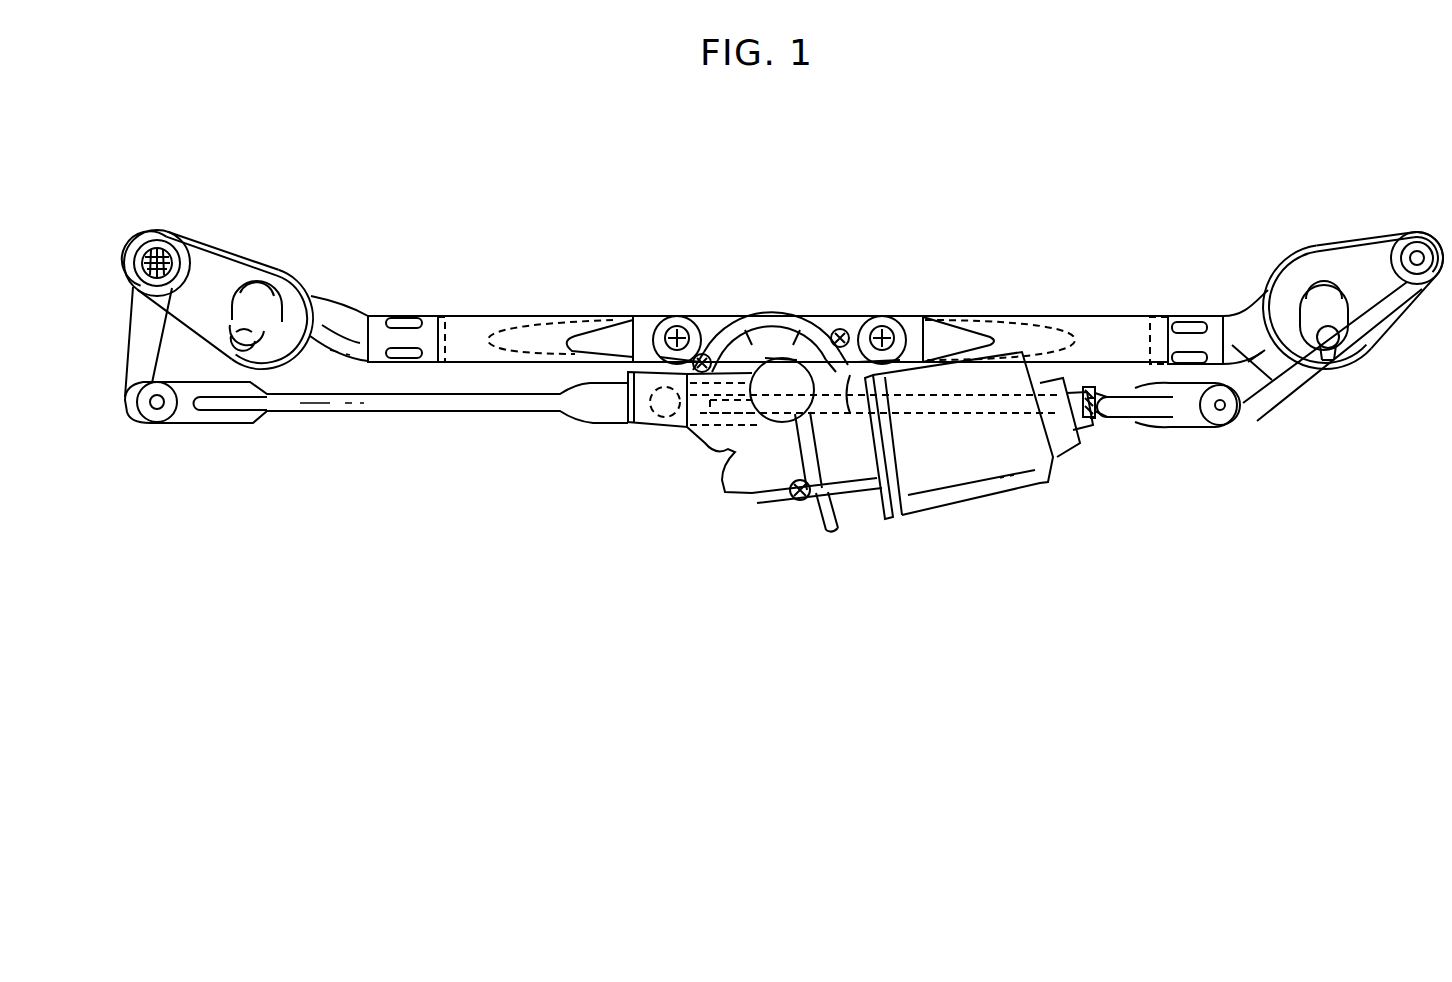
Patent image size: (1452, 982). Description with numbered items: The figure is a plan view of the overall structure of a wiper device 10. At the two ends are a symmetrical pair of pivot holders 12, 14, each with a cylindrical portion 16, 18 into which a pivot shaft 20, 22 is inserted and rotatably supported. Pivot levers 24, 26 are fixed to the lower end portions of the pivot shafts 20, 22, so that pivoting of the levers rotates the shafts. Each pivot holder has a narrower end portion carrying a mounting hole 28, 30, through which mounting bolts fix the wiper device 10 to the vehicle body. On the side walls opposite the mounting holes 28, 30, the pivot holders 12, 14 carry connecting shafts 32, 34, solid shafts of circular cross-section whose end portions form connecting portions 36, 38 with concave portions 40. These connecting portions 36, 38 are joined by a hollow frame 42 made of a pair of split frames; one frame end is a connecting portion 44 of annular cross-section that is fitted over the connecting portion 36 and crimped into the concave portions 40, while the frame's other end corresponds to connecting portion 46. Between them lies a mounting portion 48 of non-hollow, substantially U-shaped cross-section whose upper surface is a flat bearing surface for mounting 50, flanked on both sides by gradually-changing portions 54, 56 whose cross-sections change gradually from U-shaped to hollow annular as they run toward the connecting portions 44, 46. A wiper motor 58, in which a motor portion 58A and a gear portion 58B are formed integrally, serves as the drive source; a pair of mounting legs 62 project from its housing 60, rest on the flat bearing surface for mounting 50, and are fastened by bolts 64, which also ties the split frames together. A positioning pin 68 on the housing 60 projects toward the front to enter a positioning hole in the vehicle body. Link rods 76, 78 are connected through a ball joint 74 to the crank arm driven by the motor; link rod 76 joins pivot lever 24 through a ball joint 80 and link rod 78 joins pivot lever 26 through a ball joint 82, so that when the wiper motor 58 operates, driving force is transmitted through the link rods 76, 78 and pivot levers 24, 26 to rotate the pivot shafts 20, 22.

The wiper device 10 is at (789, 221).
The pivot holder 12 is at (265, 253).
The pivot holder 14 is at (1343, 240).
The cylindrical portion 16 is at (272, 295).
The cylindrical portion 18 is at (1310, 297).
The pivot shaft 20 is at (240, 325).
The pivot shaft 22 is at (1327, 350).
The pivot lever 24 is at (163, 357).
The pivot lever 26 is at (1247, 417).
The mounting hole 28 is at (160, 257).
The mounting hole 30 is at (1417, 258).
The connecting shaft 32 is at (347, 310).
The connecting shaft 34 is at (1243, 328).
The connecting portion 36 is at (447, 303).
The connecting portion 38 is at (1160, 323).
The concave portions 40 is at (405, 317).
The hollow frame 42 is at (1112, 302).
The connecting portion 44 is at (367, 360).
The connecting portion 46 is at (1217, 343).
The mounting portion 48 is at (648, 325).
The flat bearing surface for mounting 50 is at (912, 333).
The gradually-changing portion 54 is at (549, 334).
The gradually-changing portion 56 is at (1017, 330).
The wiper motor 58 is at (924, 512).
The motor portion 58A is at (978, 482).
The gear portion 58B is at (767, 513).
The housing 60 is at (733, 447).
The mounting legs 62 is at (695, 328).
The bolts 64 is at (677, 333).
The positioning pin 68 is at (847, 512).
The ball joint 74 is at (668, 407).
The link rod 76 is at (477, 412).
The link rod 78 is at (1110, 400).
The ball joint 80 is at (160, 422).
The ball joint 82 is at (1217, 417).